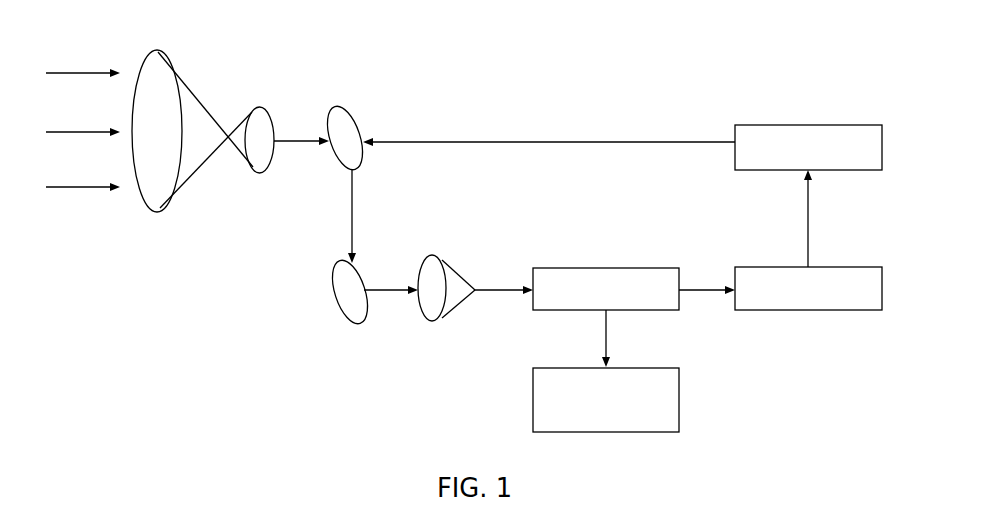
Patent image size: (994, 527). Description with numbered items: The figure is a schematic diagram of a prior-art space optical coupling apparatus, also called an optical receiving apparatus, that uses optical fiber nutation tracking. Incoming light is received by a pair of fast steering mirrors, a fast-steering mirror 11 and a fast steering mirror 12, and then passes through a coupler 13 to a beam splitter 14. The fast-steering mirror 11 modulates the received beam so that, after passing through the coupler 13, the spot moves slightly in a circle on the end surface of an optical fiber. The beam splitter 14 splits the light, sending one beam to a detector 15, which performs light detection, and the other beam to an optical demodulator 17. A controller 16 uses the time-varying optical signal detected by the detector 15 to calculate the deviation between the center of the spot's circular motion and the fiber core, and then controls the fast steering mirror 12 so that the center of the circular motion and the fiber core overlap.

The fast-steering mirror 11 is at (357, 272).
The fast steering mirror 12 is at (348, 110).
The coupler 13 is at (443, 258).
The beam splitter 14 is at (622, 267).
The detector 15 is at (833, 267).
The controller 16 is at (835, 125).
The optical demodulator 17 is at (624, 367).